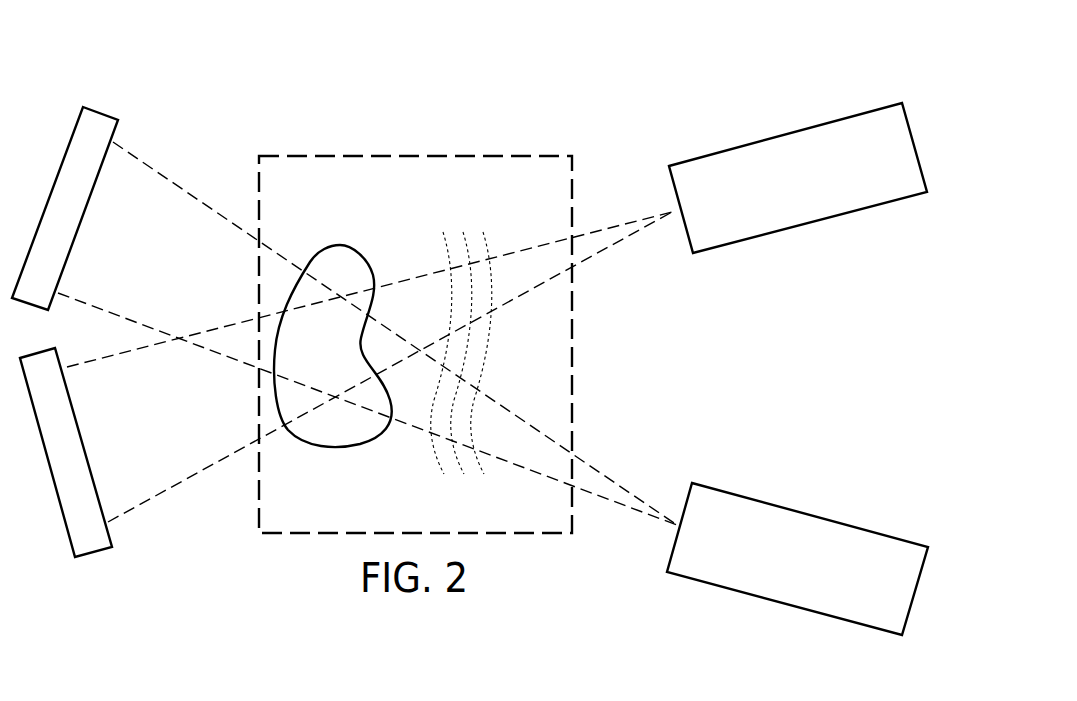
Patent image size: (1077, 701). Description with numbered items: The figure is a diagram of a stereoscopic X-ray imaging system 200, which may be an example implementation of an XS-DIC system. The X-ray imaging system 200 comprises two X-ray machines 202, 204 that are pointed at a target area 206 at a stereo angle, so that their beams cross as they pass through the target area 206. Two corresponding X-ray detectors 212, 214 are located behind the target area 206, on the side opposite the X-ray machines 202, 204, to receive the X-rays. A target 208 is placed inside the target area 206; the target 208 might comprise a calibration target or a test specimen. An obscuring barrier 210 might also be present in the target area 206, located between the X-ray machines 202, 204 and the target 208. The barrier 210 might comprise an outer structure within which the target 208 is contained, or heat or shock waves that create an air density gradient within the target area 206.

The X-ray imaging system 200 is at (678, 82).
The X-ray machine 202 is at (775, 194).
The X-ray machine 204 is at (774, 573).
The target area 206 is at (401, 156).
The target 208 is at (340, 244).
The obscuring barrier 210 is at (427, 225).
The X-ray detector 212 is at (98, 110).
The X-ray detector 214 is at (90, 557).